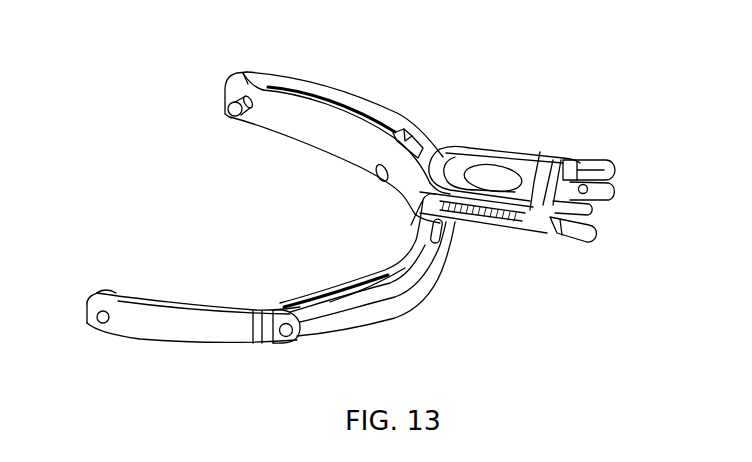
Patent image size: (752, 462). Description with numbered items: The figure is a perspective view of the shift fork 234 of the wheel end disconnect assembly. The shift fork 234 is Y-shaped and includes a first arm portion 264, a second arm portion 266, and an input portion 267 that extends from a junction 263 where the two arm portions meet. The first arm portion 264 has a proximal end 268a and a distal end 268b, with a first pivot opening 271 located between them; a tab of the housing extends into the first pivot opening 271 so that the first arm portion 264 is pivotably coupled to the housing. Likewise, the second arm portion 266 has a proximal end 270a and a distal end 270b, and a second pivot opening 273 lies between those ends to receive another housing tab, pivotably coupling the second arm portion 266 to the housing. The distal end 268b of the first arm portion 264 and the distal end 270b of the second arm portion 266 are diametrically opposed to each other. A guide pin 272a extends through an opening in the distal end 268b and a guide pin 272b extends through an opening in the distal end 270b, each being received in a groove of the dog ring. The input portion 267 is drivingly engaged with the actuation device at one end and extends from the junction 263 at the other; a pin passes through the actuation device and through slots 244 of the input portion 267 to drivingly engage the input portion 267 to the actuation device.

The shift fork 234 is at (509, 42).
The slots 244 is at (620, 184).
The junction 263 is at (448, 242).
The first arm portion 264 is at (323, 102).
The second arm portion 266 is at (340, 310).
The input portion 267 is at (534, 143).
The proximal end 268a is at (418, 150).
The distal end 268b is at (247, 70).
The proximal end 270a is at (391, 273).
The distal end 270b is at (112, 293).
The first pivot opening 271 is at (377, 181).
The guide pin 272a is at (232, 116).
The guide pin 272b is at (117, 292).
The second pivot opening 273 is at (285, 336).